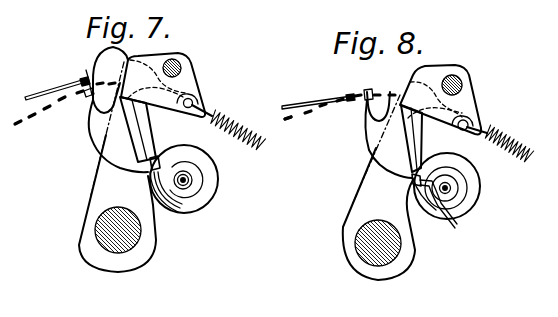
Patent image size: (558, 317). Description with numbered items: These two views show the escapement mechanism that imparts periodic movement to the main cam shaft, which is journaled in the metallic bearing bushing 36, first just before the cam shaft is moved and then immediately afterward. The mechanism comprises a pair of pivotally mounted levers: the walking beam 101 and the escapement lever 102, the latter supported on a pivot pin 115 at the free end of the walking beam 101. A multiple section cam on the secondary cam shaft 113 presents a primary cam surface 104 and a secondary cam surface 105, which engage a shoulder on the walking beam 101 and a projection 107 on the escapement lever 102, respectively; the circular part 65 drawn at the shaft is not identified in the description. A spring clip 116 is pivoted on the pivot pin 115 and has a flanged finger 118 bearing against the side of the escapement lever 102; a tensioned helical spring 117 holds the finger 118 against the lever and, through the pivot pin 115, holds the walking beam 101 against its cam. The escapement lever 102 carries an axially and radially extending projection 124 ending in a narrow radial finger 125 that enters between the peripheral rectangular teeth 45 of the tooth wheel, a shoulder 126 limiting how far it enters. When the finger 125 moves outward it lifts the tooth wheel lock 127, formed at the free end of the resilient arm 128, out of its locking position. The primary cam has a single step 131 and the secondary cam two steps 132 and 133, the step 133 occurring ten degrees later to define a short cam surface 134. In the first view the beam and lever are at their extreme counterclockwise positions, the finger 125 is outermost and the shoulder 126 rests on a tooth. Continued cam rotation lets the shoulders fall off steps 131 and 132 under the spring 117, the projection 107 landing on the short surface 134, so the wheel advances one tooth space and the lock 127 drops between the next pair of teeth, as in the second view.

In FIG. 7, the metallic bearing bushing 36 is at (100, 229).
In FIG. 8, the metallic bearing bushing 36 is at (372, 247).
In FIG. 8, the peripheral rectangular teeth 45 is at (290, 120).
In FIG. 7, the ratchet wheel 65 is at (193, 172).
In FIG. 8, the ratchet wheel 65 is at (456, 180).
In FIG. 7, the lever 101 is at (156, 240).
In FIG. 8, the lever 101 is at (418, 249).
In FIG. 7, the lever 102 is at (133, 127).
In FIG. 8, the lever 102 is at (405, 137).
In FIG. 7, the primary cam surface 104 is at (206, 199).
In FIG. 8, the primary cam surface 104 is at (460, 208).
In FIG. 8, the secondary cam surface 105 is at (457, 189).
In FIG. 7, the projection 107 is at (148, 170).
In FIG. 8, the projection 107 is at (410, 181).
In FIG. 7, the secondary cam shaft 113 is at (190, 182).
In FIG. 8, the secondary cam shaft 113 is at (462, 198).
In FIG. 7, the pivot pin 115 is at (180, 63).
In FIG. 8, the pivot pin 115 is at (460, 80).
In FIG. 7, the spring clip 116 is at (195, 97).
In FIG. 8, the spring clip 116 is at (475, 111).
In FIG. 7, the helical spring 117 is at (228, 114).
In FIG. 8, the helical spring 117 is at (505, 130).
In FIG. 7, the flanged finger 118 is at (108, 47).
In FIG. 8, the flanged finger 118 is at (404, 90).
In FIG. 7, the projection 124 is at (96, 160).
In FIG. 8, the projection 124 is at (358, 118).
In FIG. 7, the finger 125 is at (85, 98).
In FIG. 8, the finger 125 is at (376, 85).
In FIG. 7, the shoulder 126 is at (80, 93).
In FIG. 8, the shoulder 126 is at (359, 103).
In FIG. 7, the tooth wheel lock 127 is at (88, 76).
In FIG. 8, the tooth wheel lock 127 is at (350, 96).
In FIG. 7, the resilient arm 128 is at (26, 97).
In FIG. 8, the resilient arm 128 is at (284, 105).
In FIG. 7, the step 131 is at (168, 212).
In FIG. 8, the step 131 is at (458, 225).
In FIG. 7, the step 132 is at (172, 226).
In FIG. 8, the step 132 is at (410, 183).
In FIG. 7, the step 133 is at (166, 200).
In FIG. 8, the step 133 is at (456, 229).
In FIG. 7, the short cam surface 134 is at (190, 182).